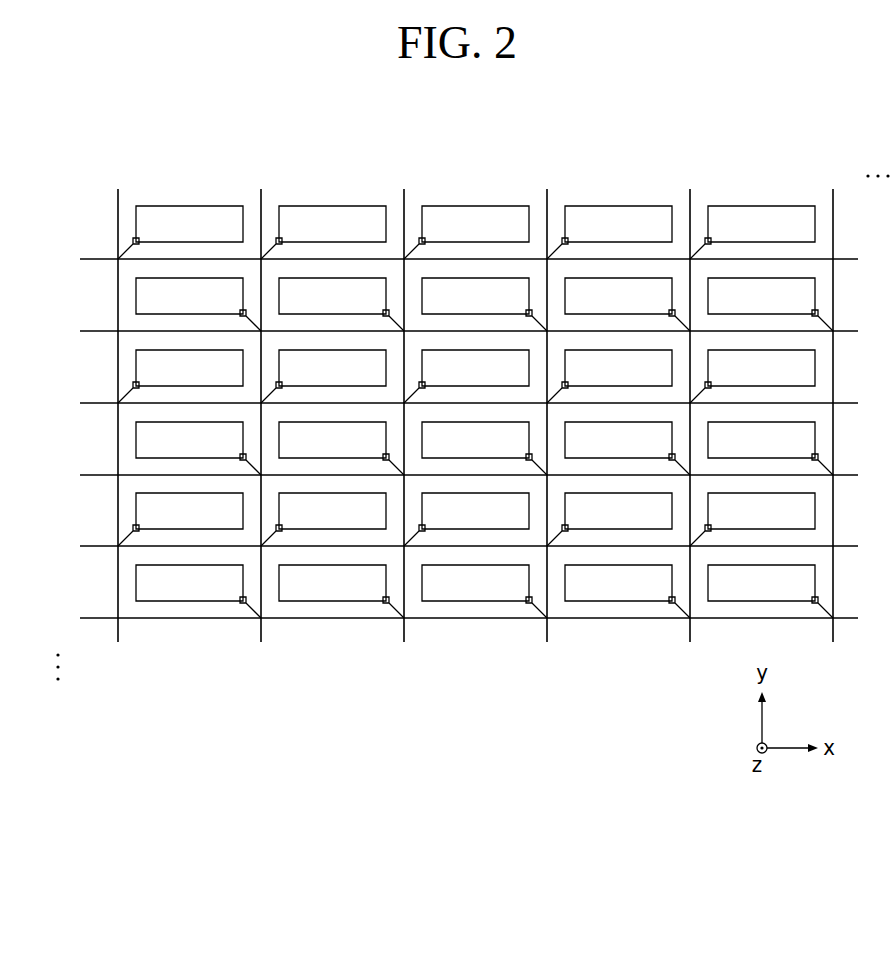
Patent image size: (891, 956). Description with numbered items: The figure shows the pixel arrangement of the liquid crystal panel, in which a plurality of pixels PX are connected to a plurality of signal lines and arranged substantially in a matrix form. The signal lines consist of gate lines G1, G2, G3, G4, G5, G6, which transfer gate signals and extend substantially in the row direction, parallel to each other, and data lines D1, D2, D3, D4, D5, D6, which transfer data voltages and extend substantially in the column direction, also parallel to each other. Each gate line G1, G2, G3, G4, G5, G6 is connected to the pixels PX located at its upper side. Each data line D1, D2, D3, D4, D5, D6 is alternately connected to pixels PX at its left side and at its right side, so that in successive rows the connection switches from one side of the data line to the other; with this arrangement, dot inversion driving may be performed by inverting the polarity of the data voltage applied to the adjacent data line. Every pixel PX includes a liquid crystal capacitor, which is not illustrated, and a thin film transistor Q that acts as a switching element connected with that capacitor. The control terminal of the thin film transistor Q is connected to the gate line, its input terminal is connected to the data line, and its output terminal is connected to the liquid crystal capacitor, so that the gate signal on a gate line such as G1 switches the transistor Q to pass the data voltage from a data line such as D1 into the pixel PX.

The pixel PX is at (189, 205).
The thin film transistor Q is at (132, 240).
The data line D1 is at (118, 401).
The data line D2 is at (261, 401).
The data line D3 is at (404, 401).
The data line D4 is at (547, 401).
The data line D5 is at (690, 401).
The data line D6 is at (833, 401).
The gate line G1 is at (452, 262).
The gate line G2 is at (452, 334).
The gate line G3 is at (452, 406).
The gate line G4 is at (452, 478).
The gate line G5 is at (452, 549).
The gate line G6 is at (452, 621).